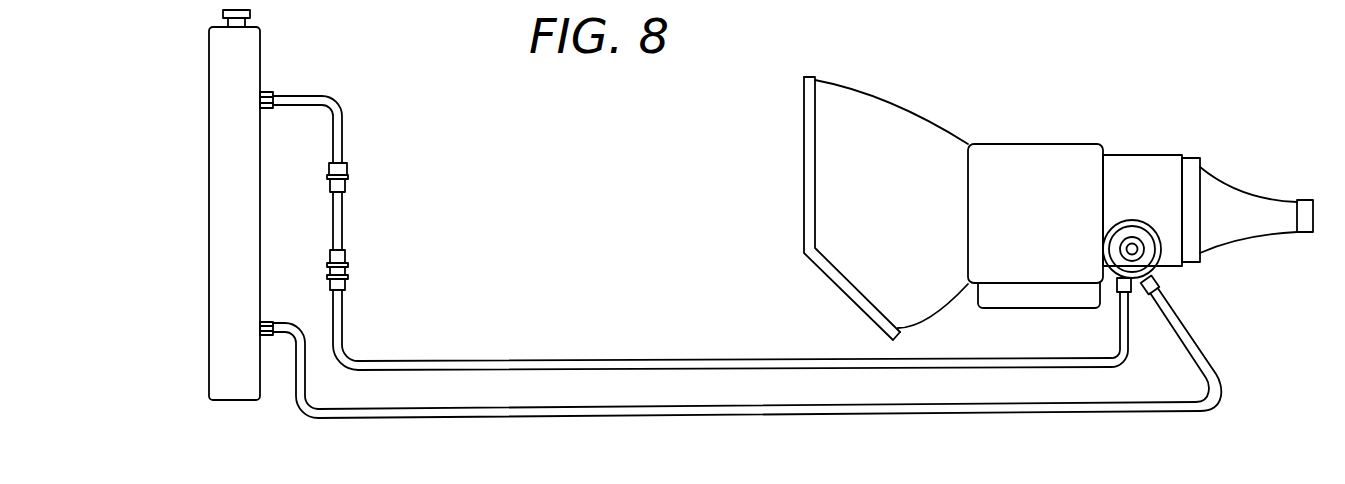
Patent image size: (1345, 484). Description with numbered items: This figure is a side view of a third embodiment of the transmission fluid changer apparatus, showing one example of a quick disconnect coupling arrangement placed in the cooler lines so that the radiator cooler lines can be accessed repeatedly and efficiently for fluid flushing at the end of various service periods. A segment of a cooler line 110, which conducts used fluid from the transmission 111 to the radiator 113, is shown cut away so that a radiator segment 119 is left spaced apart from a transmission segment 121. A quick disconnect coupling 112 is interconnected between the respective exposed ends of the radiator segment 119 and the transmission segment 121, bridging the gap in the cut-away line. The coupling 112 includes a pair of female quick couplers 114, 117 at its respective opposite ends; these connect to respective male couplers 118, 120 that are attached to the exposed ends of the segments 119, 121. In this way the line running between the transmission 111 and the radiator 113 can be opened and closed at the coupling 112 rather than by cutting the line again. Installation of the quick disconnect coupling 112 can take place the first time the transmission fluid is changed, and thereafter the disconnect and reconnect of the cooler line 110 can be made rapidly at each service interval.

The cooler line segment 110 is at (743, 331).
The transmission 111 is at (1070, 144).
The quick disconnect coupling 112 is at (350, 213).
The radiator 113 is at (261, 57).
The female quick coupler 114 is at (348, 178).
The female quick coupler 117 is at (348, 265).
The male coupler 118 is at (346, 161).
The radiator segment 119 is at (323, 95).
The male coupler 120 is at (348, 283).
The transmission segment 121 is at (532, 360).